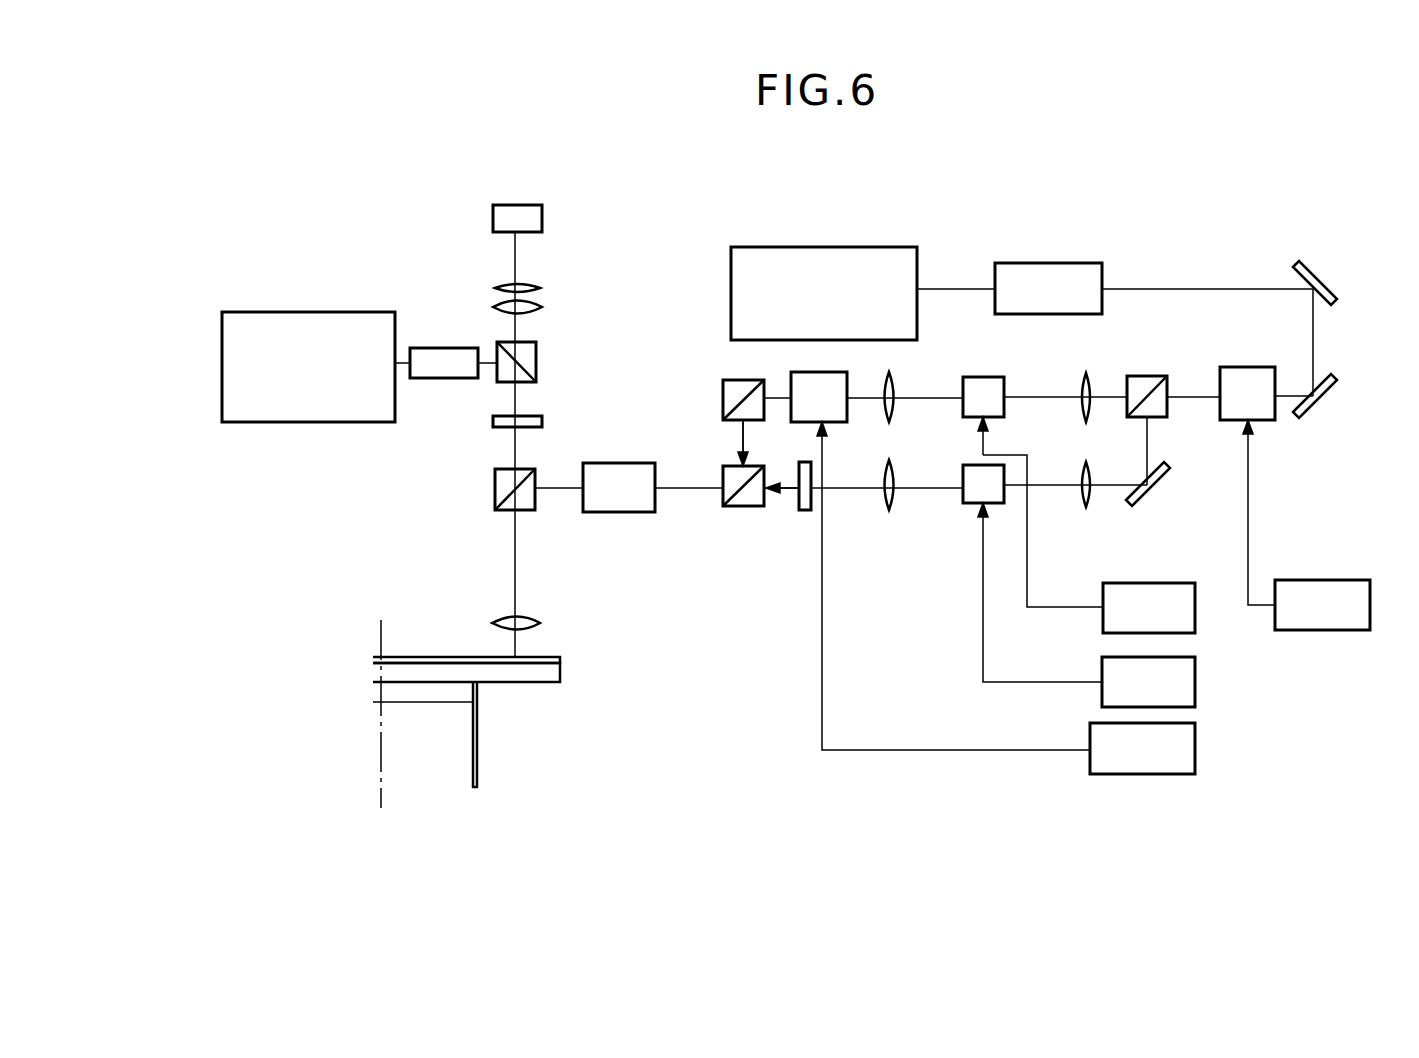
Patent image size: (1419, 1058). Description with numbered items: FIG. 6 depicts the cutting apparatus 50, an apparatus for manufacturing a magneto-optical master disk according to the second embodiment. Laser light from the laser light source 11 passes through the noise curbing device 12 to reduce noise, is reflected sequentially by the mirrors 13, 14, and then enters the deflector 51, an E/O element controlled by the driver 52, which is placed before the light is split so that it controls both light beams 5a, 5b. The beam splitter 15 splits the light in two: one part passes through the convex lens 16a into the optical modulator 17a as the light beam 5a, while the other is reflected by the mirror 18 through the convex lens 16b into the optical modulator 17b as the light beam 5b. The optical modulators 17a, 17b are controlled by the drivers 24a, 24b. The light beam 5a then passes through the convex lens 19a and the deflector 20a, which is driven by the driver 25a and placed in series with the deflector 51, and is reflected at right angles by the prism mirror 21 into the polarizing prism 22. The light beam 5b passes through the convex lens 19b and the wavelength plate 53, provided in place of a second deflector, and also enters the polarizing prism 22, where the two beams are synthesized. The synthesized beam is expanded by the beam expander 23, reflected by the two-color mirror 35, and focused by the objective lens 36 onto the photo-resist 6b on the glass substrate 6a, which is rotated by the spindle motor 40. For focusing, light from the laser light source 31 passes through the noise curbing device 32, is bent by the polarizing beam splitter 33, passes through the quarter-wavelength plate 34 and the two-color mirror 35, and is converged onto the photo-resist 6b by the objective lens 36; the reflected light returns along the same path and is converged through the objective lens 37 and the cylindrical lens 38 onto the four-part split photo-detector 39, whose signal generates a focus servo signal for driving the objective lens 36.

The light beam 5a is at (742, 440).
The light beam 5b is at (788, 487).
The glass substrate 6a is at (561, 684).
The photo-resist 6b is at (561, 660).
The laser light source 11 is at (816, 247).
The noise curbing device 12 is at (1030, 263).
The mirror 13 is at (1318, 266).
The mirror 14 is at (1318, 402).
The beam splitter 15 is at (1148, 377).
The convex lens 16a is at (1093, 387).
The convex lens 16b is at (1082, 500).
The optical modulator 17a is at (977, 376).
The optical modulator 17b is at (958, 498).
The mirror 18 is at (1167, 478).
The convex lens 19a is at (898, 378).
The convex lens 19b is at (922, 440).
The deflector 20a is at (848, 406).
The prism mirror 21 is at (728, 380).
The polarizing prism 22 is at (728, 510).
The beam expander 23 is at (630, 463).
The driver 24a is at (1133, 583).
The driver 24b is at (1195, 682).
The driver 25a is at (1195, 750).
The laser light source 31 is at (318, 312).
The noise curbing device 32 is at (422, 348).
The polarizing beam splitter 33 is at (536, 358).
The ¼-wavelength plate 34 is at (540, 416).
The 2-color mirror 35 is at (495, 492).
The objective lens 36 is at (540, 623).
The objective lens 37 is at (540, 310).
The cylindrical lens 38 is at (538, 287).
The 4-part split photo-detector 39 is at (542, 217).
The spindle motor 40 is at (478, 742).
The cutting apparatus 50 is at (1234, 194).
The deflector 51 is at (1238, 367).
The driver 52 is at (1312, 580).
The wavelength plate 53 is at (805, 513).